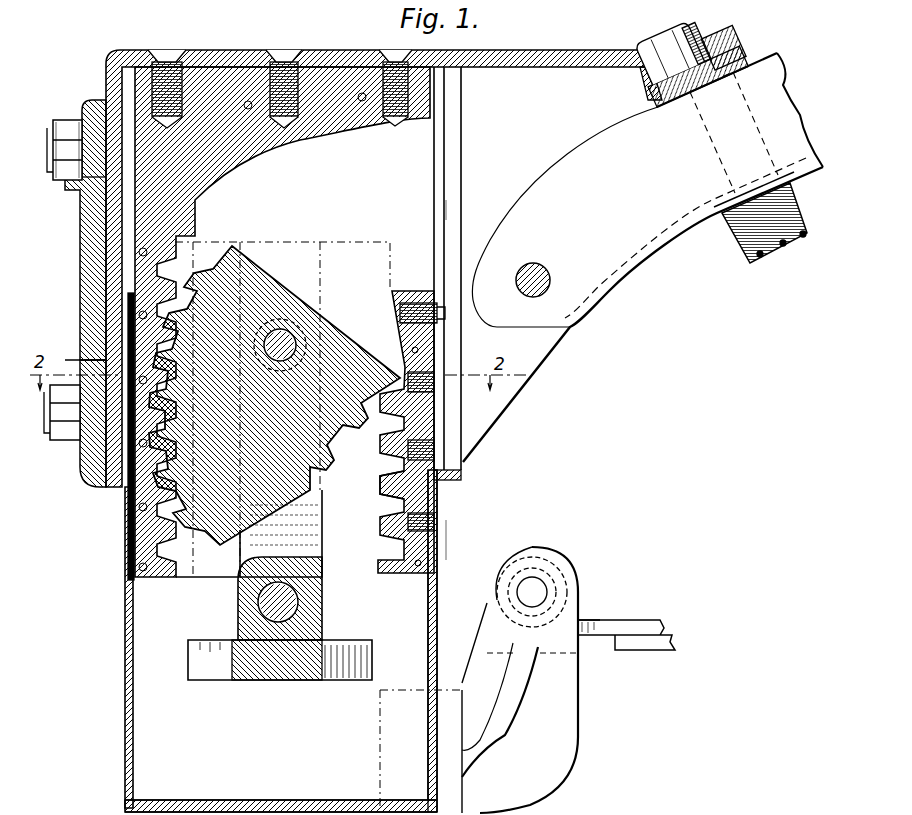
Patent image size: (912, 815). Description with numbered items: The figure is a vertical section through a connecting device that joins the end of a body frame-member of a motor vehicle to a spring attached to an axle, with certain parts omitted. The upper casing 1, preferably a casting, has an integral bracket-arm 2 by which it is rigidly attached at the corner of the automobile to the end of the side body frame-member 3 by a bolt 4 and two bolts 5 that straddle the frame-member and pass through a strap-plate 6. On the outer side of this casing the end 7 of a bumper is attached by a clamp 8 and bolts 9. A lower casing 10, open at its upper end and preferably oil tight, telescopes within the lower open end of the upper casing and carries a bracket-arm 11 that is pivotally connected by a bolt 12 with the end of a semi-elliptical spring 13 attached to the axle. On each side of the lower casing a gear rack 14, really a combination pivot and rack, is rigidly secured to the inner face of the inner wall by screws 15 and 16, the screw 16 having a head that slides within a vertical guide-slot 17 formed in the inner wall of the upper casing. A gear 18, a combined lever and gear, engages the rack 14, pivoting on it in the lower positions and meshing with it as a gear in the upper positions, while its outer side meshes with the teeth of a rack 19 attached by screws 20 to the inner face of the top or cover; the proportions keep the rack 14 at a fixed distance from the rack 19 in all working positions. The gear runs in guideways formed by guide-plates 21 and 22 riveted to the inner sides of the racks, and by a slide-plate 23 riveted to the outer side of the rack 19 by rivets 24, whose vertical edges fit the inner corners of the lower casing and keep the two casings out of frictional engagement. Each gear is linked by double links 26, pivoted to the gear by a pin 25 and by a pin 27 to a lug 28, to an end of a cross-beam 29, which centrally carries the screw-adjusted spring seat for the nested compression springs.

The upper casing 1 is at (212, 50).
The bracket-arm 2 is at (573, 90).
The side body frame-member 3 is at (790, 92).
The bolt 4 is at (548, 272).
The bolts 5 is at (715, 45).
The strap-plate 6 is at (730, 222).
The end of bumper 7 is at (80, 272).
The clamp 8 is at (80, 222).
The bolts 9 is at (50, 430).
The lower casing 10 is at (437, 597).
The bracket-arm 11 is at (555, 716).
The bolt 12 is at (535, 592).
The semi-elliptical spring 13 is at (632, 625).
The gear rack 14 is at (432, 552).
The screws 15 is at (436, 522).
The screw 16 is at (442, 300).
The vertical guide-slot 17 is at (452, 218).
The gear 18 is at (128, 500).
The rack 19 is at (128, 478).
The screws 20 is at (290, 60).
The guide-plate 21 is at (408, 485).
The guide-plate 22 is at (140, 560).
The slide-plate 23 is at (206, 565).
The rivets 24 is at (146, 572).
The pin 25 is at (292, 336).
The double links 26 is at (318, 535).
The pin 27 is at (278, 605).
The lug 28 is at (300, 632).
The cross-beam 29 is at (294, 680).